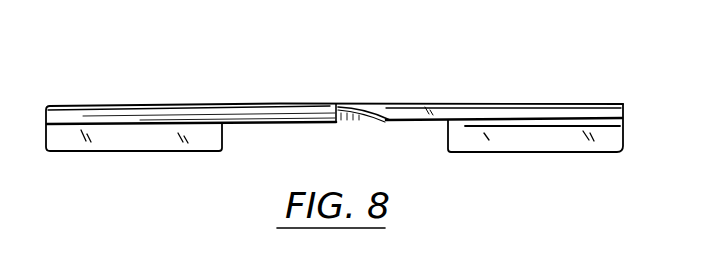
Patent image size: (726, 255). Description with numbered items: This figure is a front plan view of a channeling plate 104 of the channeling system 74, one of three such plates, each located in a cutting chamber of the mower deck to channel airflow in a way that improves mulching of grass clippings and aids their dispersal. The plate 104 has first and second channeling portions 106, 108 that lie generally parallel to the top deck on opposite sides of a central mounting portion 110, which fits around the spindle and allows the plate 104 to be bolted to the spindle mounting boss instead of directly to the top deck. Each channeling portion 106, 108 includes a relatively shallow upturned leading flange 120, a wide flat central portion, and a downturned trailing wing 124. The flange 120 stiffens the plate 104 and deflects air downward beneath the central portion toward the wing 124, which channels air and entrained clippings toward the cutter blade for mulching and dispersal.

The channeling system 74 is at (252, 160).
The channeling plate 104 is at (300, 50).
The first channeling portion 106 is at (137, 99).
The second channeling portion 108 is at (586, 98).
The central mounting portion 110 is at (379, 108).
The upturned leading flange 120 is at (71, 114).
The downturned trailing wing 124 is at (95, 146).